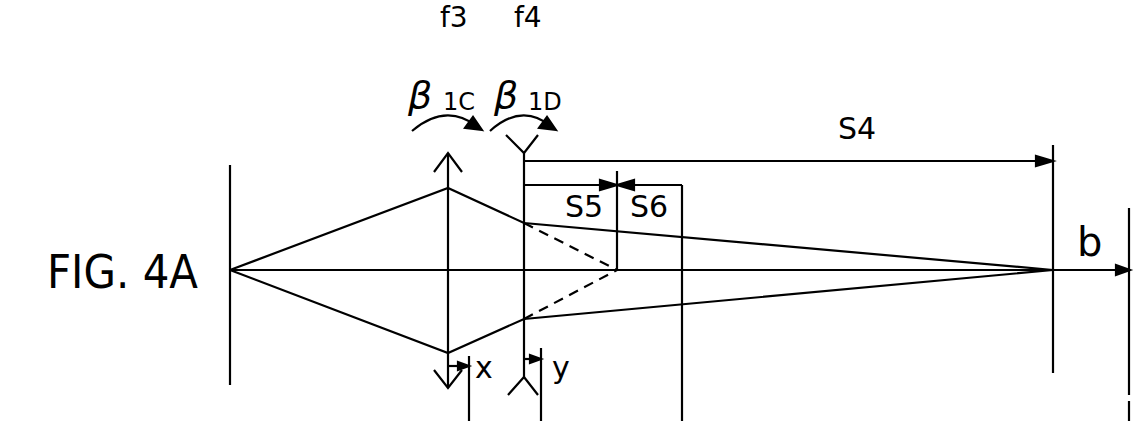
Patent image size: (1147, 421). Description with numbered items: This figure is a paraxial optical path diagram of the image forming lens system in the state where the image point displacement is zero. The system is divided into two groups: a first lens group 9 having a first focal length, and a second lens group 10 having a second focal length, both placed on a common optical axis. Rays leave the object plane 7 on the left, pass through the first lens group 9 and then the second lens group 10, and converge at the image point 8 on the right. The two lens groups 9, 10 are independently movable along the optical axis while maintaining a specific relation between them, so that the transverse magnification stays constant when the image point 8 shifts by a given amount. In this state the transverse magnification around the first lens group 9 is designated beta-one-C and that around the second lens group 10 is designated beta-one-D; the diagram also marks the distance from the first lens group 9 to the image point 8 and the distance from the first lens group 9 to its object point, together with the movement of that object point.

The object plane 7 is at (230, 254).
The image point 8 is at (1051, 239).
The first lens group 9 is at (448, 212).
The second lens group 10 is at (528, 216).